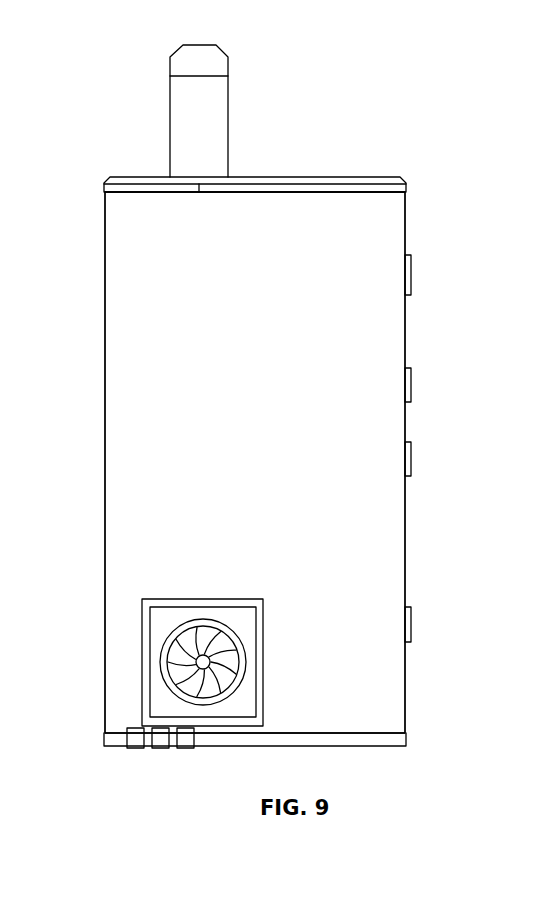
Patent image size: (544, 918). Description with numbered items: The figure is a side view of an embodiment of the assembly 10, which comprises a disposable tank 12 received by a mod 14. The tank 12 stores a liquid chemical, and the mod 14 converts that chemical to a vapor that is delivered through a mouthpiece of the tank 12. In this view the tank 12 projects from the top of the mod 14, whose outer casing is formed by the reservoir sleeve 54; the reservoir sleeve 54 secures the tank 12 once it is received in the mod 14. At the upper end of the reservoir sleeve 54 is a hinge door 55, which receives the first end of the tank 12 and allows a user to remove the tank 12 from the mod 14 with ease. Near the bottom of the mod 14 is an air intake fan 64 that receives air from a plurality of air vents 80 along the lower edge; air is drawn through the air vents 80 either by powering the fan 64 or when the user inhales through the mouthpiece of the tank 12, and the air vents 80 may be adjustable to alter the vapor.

The assembly 10 is at (428, 160).
The disposable tank 12 is at (183, 138).
The mod 14 is at (405, 540).
The reservoir sleeve 54 is at (113, 230).
The hinge door 55 is at (124, 177).
The air intake fan 64 is at (178, 672).
The air vents 80 is at (159, 750).